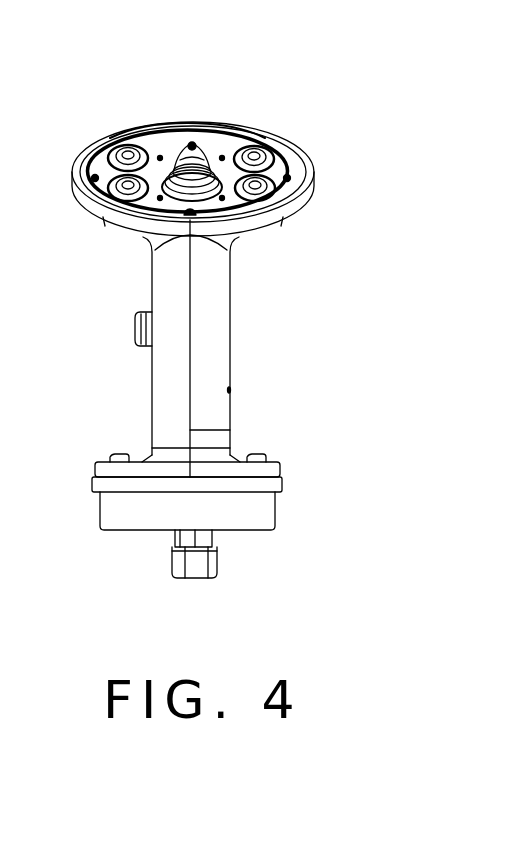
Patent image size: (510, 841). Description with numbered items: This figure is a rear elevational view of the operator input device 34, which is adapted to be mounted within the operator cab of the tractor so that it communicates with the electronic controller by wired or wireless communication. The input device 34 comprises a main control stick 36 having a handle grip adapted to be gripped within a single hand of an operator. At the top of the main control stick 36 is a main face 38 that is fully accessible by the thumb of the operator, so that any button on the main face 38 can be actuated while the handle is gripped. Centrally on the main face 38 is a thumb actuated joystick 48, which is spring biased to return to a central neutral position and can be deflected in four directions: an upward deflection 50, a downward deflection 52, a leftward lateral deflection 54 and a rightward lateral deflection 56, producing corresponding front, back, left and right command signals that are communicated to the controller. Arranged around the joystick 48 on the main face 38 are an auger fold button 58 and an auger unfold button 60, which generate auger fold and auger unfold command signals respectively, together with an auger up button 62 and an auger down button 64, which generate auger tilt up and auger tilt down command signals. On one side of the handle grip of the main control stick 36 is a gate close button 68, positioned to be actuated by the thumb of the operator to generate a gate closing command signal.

The input device 34 is at (209, 312).
The main control stick 36 is at (207, 397).
The main face 38 is at (209, 175).
The thumb actuated joystick 48 is at (233, 175).
The upward deflection 50 is at (189, 142).
The downward deflection 52 is at (186, 180).
The leftward lateral deflection 54 is at (175, 150).
The rightward lateral deflection 56 is at (208, 148).
The auger fold button 58 is at (110, 146).
The auger unfold button 60 is at (92, 175).
The auger up button 62 is at (282, 147).
The auger down button 64 is at (282, 202).
The gate close button 68 is at (134, 328).